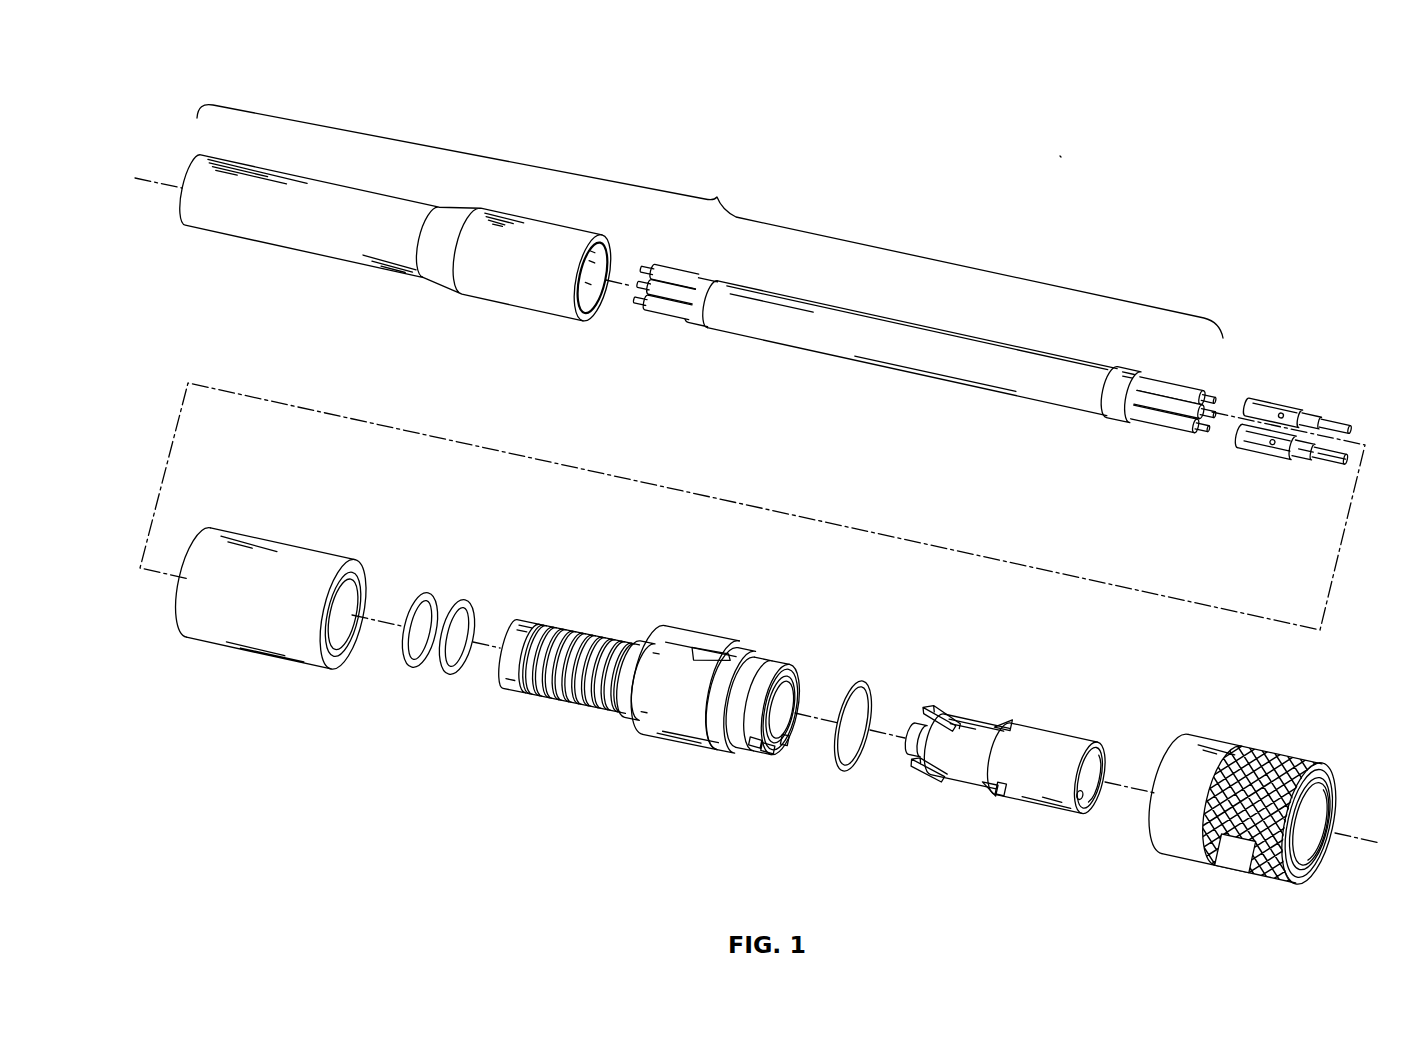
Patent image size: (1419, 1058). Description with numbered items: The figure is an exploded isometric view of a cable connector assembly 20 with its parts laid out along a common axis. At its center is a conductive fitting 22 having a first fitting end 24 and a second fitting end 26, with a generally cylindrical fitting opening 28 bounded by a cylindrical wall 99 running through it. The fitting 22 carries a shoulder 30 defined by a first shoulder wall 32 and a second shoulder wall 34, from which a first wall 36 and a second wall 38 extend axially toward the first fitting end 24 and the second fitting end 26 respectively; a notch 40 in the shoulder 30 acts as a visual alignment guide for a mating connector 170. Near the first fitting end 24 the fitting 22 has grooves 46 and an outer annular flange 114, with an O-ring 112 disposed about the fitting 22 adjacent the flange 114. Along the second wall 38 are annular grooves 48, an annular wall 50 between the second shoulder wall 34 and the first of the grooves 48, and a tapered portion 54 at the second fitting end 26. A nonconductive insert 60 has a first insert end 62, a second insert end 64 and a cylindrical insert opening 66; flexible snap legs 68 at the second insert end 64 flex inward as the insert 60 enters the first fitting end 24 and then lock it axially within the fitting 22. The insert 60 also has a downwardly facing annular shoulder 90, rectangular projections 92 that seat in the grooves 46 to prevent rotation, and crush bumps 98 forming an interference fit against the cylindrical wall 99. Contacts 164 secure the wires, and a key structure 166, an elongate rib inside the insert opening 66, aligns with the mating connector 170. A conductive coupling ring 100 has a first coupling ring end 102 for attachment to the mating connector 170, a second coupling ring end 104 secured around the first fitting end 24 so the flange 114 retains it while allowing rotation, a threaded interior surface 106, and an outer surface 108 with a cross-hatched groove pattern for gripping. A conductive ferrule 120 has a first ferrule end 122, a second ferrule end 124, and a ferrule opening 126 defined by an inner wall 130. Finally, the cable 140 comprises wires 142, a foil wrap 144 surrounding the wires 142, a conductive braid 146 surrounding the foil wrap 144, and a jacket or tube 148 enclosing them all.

The cable connector assembly 20 is at (1062, 153).
The fitting 22 is at (668, 678).
The first fitting end 24 is at (770, 658).
The second fitting end 26 is at (526, 694).
The fitting opening 28 is at (786, 691).
The shoulder 30 is at (694, 688).
The first shoulder wall 32 is at (745, 657).
The second shoulder wall 34 is at (648, 645).
The first wall 36 is at (720, 735).
The second wall 38 is at (617, 713).
The notch 40 is at (705, 648).
The grooves 46 is at (758, 752).
The annular grooves 48 is at (560, 622).
The annular wall 50 is at (636, 737).
The tapered portion 54 is at (527, 625).
The insert 60 is at (1020, 765).
The first insert end 62 is at (1097, 737).
The second insert end 64 is at (958, 785).
The insert opening 66 is at (1098, 757).
The flexible snap legs 68 is at (920, 723).
The annular shoulder 90 is at (1068, 756).
The projections 92 is at (1001, 797).
The crush bumps 98 is at (1001, 733).
The cylindrical wall 99 is at (791, 740).
The coupling ring 100 is at (1251, 791).
The first coupling ring end 102 is at (1323, 876).
The second coupling ring end 104 is at (1163, 837).
The threaded interior surface 106 is at (1321, 797).
The outer surface 108 is at (1276, 757).
The O-ring 112 is at (859, 678).
The outer annular flange 114 is at (760, 660).
The ferrule 120 is at (263, 635).
The first ferrule end 122 is at (343, 665).
The second ferrule end 124 is at (198, 608).
The ferrule opening 126 is at (342, 591).
The inner wall 130 is at (343, 648).
The cable 140 is at (724, 197).
The wires 142 is at (1206, 385).
The foil wrap 144 is at (1128, 365).
The conductive braid 146 is at (962, 372).
The jacket or tube 148 is at (538, 222).
The contacts 164 is at (1289, 450).
The key structure 166 is at (1090, 800).
The mating connector 170 is at (1133, 426).